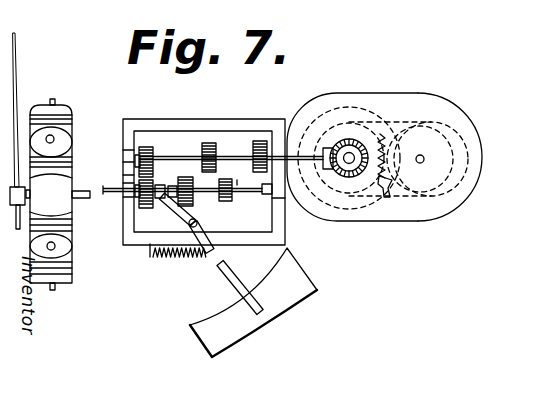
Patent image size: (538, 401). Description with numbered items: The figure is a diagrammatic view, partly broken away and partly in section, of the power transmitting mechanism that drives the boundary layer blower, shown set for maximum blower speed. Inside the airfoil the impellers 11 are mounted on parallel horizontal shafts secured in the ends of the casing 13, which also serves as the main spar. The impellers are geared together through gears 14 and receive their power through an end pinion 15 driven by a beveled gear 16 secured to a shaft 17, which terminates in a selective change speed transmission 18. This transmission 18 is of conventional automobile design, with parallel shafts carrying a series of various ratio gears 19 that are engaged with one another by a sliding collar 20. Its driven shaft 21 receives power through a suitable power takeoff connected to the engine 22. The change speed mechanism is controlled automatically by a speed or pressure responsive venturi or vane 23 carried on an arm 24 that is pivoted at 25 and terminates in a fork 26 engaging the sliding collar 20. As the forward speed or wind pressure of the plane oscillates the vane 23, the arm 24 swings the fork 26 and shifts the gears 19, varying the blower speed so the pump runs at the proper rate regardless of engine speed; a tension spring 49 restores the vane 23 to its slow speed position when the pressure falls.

The impellers 11 is at (378, 102).
The casing 13 is at (482, 187).
The gears 14 is at (383, 164).
The end pinion 15 is at (358, 143).
The beveled gear 16 is at (328, 137).
The shaft 17 is at (296, 122).
The selective change speed transmission 18 is at (207, 110).
The various ratio gears 19 is at (201, 150).
The sliding collar 20 is at (163, 200).
The driven shaft 21 is at (238, 192).
The engine 22 is at (68, 258).
The vane 23 is at (318, 291).
The arm 24 is at (236, 280).
The pivot 25 is at (199, 222).
The fork 26 is at (163, 190).
The tension spring 49 is at (190, 258).